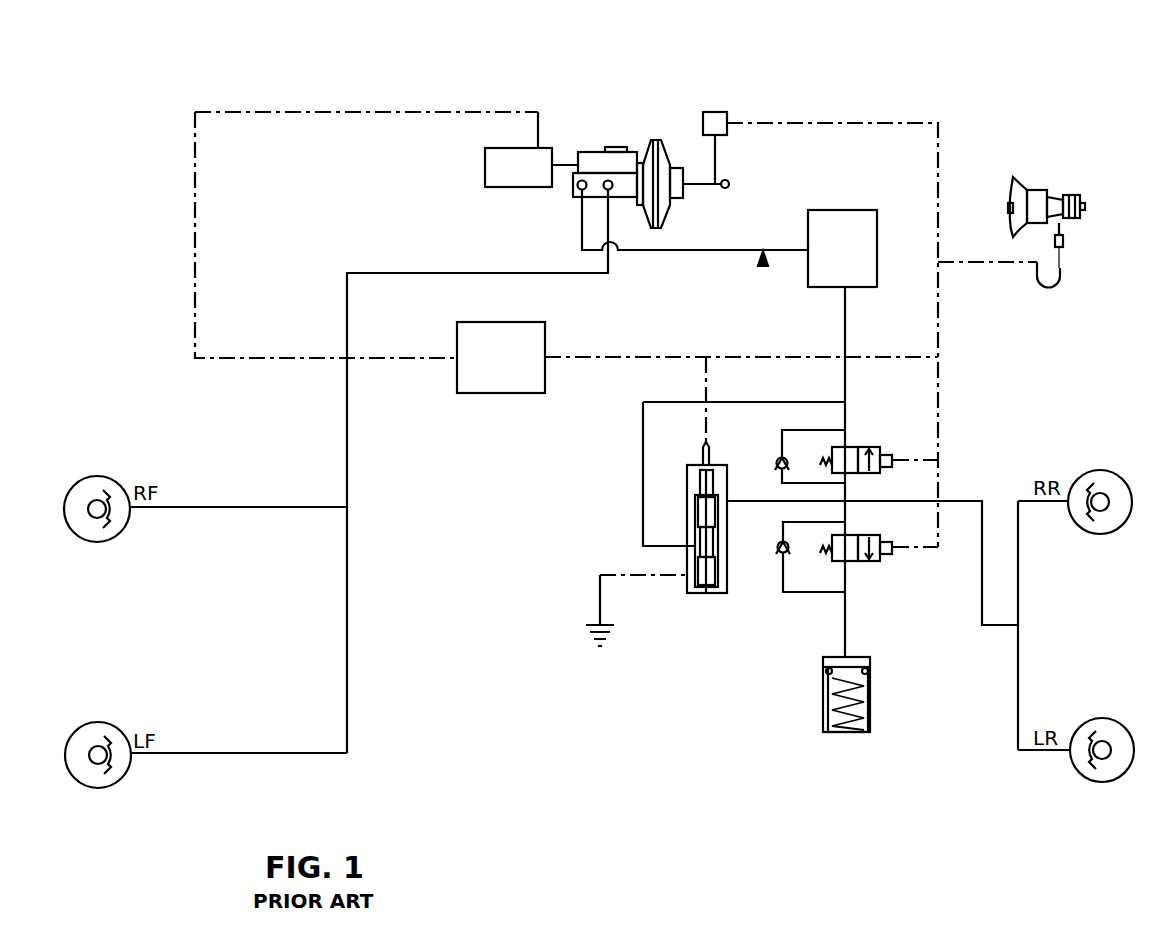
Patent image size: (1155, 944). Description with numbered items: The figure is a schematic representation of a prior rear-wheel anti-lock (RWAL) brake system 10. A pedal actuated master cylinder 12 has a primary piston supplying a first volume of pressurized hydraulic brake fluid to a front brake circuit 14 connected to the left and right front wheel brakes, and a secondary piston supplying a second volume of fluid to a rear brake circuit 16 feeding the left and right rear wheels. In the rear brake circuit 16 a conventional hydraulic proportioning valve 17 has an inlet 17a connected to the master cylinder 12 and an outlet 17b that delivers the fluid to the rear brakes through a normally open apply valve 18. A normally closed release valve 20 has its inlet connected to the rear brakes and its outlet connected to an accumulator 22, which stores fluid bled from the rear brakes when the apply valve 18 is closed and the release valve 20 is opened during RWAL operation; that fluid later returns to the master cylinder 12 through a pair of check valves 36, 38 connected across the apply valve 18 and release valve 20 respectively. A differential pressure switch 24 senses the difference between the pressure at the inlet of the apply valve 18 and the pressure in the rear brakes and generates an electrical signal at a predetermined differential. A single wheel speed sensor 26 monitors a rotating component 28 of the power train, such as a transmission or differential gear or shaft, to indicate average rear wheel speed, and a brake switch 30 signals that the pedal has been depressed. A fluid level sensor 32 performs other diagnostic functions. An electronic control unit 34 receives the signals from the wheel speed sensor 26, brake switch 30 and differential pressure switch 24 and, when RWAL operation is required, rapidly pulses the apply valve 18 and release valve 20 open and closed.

The RWAL brake system 10 is at (873, 94).
The master cylinder 12 is at (580, 192).
The front brake circuit 14 is at (348, 465).
The rear brake circuit 16 is at (763, 270).
The hydraulic proportioning valve 17 is at (852, 212).
The inlet 17a is at (808, 247).
The outlet 17b is at (842, 287).
The apply valve 18 is at (867, 447).
The release valve 20 is at (870, 562).
The accumulator 22 is at (870, 700).
The differential pressure switch 24 is at (727, 582).
The single wheel speed sensor 26 is at (1063, 240).
The component 28 is at (1037, 190).
The brake switch 30 is at (715, 112).
The fluid level sensor 32 is at (548, 147).
The electronic control unit 34 is at (522, 393).
The check valve 36 is at (780, 456).
The check valve 38 is at (782, 554).